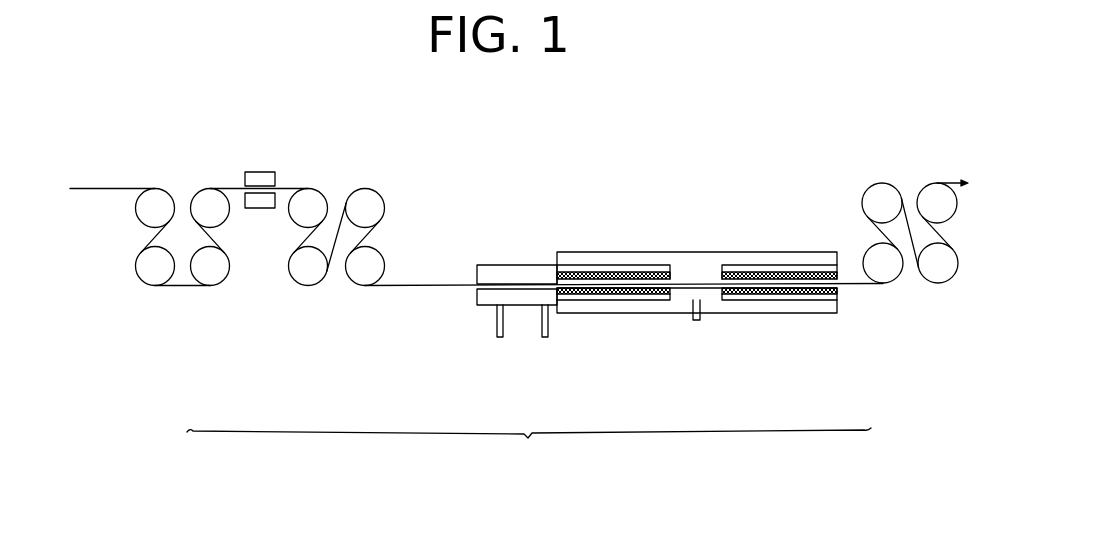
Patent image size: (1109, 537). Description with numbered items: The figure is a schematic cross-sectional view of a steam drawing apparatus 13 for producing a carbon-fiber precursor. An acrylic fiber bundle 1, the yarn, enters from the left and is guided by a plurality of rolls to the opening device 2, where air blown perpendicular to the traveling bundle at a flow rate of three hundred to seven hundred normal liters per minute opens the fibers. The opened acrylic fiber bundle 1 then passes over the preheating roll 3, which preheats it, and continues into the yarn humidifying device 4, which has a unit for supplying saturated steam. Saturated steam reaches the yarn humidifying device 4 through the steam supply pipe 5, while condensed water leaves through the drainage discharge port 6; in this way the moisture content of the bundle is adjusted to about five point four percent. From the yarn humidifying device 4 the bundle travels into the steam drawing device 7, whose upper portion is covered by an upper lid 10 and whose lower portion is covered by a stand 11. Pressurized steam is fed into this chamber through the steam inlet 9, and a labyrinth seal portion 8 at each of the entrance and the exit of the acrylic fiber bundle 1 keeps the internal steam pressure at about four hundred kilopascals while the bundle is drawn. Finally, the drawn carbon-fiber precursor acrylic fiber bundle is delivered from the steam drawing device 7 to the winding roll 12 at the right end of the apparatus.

The acrylic fiber bundle 1 is at (103, 188).
The opening device 2 is at (262, 172).
The preheating roll 3 is at (366, 194).
The yarn humidifying device 4 is at (492, 271).
The steam supply pipe 5 is at (544, 337).
The drainage discharge port 6 is at (499, 337).
The steam drawing device 7 is at (682, 206).
The labyrinth seal portion 8 is at (590, 266).
The steam inlet 9 is at (697, 320).
The upper lid 10 is at (722, 252).
The stand 11 is at (740, 313).
The winding roll 12 is at (890, 268).
The steam drawing apparatus 13 is at (529, 449).